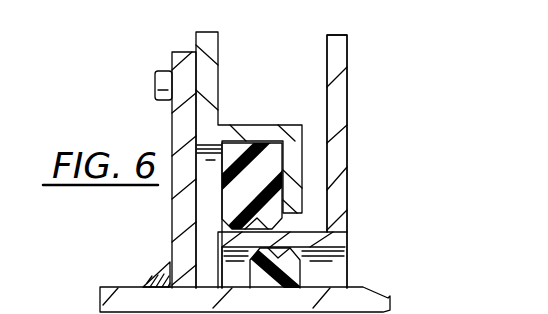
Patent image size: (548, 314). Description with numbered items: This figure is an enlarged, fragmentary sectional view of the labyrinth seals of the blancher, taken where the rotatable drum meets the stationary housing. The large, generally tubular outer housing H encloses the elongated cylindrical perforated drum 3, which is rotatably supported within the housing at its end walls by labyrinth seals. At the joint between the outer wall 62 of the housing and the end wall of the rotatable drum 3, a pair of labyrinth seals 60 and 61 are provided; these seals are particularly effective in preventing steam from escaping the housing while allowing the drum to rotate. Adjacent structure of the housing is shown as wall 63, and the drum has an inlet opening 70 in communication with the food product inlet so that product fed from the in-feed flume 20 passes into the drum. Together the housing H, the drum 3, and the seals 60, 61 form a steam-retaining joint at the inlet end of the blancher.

The outer housing H is at (196, 33).
The perforated drum 3 is at (325, 52).
The outer wall of the housing 62 is at (218, 68).
The labyrinth seal 60 is at (246, 143).
The frame side wall 63 is at (350, 97).
The inlet opening 70 is at (334, 253).
The labyrinth seal 61 is at (303, 273).
The in-feed flume 20 is at (120, 287).